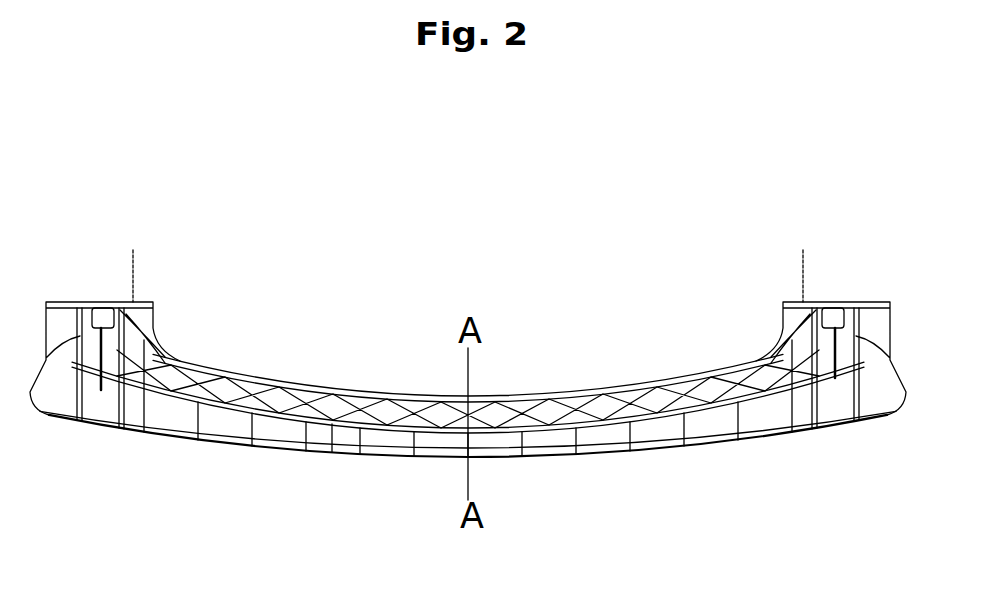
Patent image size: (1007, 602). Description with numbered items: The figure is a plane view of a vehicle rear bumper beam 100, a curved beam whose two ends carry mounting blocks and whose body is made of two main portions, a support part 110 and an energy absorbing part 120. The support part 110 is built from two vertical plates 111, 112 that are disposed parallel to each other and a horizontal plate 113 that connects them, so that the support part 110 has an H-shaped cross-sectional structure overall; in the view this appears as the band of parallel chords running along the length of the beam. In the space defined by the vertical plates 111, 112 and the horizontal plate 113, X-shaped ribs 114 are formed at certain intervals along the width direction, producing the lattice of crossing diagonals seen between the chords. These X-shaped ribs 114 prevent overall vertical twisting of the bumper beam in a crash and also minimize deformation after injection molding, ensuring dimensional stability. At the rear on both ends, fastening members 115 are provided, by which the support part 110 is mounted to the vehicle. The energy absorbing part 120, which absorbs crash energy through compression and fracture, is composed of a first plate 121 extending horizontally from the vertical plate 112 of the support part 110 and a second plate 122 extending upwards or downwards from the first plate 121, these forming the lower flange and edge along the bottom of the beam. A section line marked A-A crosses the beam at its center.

The vehicle rear bumper beam 100 is at (158, 192).
The support part 110 is at (352, 368).
The vertical plate 111 is at (382, 397).
The vertical plate 112 is at (335, 460).
The horizontal plate 113 is at (608, 407).
The X-shaped ribs 114 is at (687, 383).
The fastening members 115 is at (803, 272).
The energy absorbing part 120 is at (690, 472).
The first plate 121 is at (650, 432).
The second plate 122 is at (560, 458).